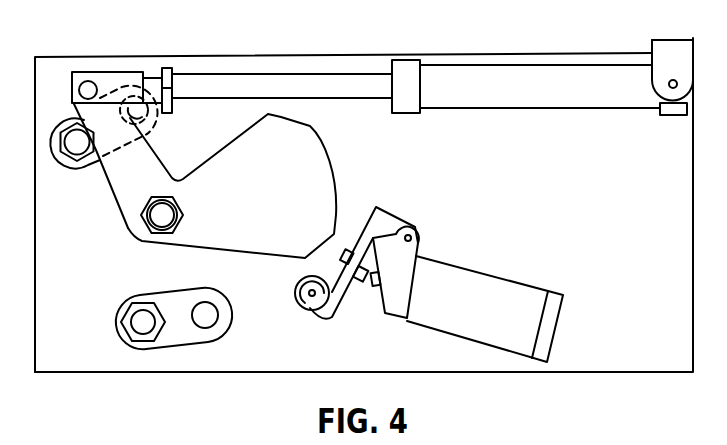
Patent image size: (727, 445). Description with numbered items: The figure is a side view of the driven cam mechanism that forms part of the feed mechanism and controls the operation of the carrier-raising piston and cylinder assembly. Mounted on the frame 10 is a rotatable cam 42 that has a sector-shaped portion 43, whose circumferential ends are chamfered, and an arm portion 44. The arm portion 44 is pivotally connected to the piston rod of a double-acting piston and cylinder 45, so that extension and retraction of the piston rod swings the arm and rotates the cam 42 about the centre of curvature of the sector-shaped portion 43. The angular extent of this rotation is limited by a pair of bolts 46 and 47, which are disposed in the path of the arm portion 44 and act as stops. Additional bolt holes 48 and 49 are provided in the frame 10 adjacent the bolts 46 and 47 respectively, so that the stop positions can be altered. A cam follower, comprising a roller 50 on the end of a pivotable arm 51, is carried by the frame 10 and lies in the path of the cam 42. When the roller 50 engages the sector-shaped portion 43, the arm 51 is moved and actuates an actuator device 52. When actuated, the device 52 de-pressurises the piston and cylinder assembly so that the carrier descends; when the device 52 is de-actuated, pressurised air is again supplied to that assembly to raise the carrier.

The frame 10 is at (662, 323).
The rotatable cam 42 is at (131, 233).
The sector-shaped portion 43 is at (292, 172).
The arm portion 44 is at (128, 172).
The double-acting piston and cylinder 45 is at (497, 59).
The bolt 46 is at (66, 165).
The bolt 47 is at (141, 326).
The bolt hole 48 is at (141, 108).
The bolt hole 49 is at (205, 316).
The roller 50 is at (309, 310).
The pivotable arm 51 is at (382, 223).
The actuator device 52 is at (498, 295).